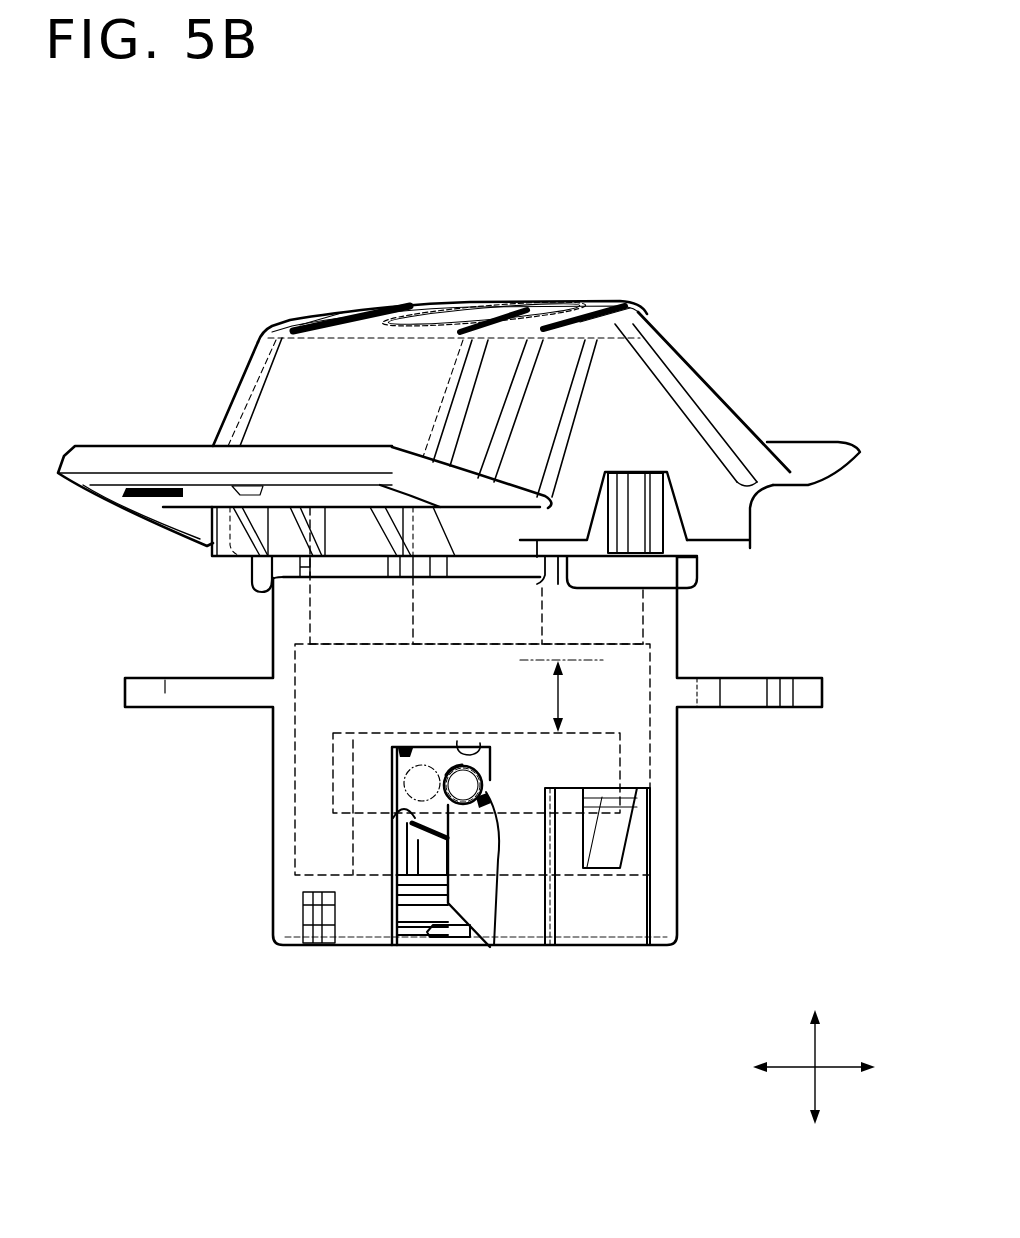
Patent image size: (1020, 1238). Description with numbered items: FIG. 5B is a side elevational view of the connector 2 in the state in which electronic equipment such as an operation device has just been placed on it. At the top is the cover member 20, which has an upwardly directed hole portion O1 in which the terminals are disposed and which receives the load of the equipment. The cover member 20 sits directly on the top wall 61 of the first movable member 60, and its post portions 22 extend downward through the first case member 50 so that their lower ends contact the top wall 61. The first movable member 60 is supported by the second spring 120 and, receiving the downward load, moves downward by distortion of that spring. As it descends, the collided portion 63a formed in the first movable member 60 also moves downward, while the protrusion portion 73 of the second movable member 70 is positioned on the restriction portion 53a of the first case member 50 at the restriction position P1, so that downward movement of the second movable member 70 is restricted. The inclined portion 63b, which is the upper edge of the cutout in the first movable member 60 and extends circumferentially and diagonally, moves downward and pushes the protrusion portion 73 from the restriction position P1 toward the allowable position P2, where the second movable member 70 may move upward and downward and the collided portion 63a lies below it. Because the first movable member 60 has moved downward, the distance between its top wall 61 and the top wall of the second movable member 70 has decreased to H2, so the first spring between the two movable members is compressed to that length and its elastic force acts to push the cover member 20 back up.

The connector 2 is at (402, 242).
The hole portion O1 is at (326, 312).
The cover member 20 is at (687, 355).
The post portions 22 is at (310, 604).
The first case member 50 is at (679, 886).
The restriction portion 53a is at (496, 805).
The first movable member 60 is at (652, 745).
The top wall 61 is at (458, 641).
The collided portion 63a is at (403, 808).
The inclined portion 63b is at (460, 742).
The second movable member 70 is at (622, 775).
The protrusion portion 73 is at (513, 766).
The second spring 120 is at (416, 910).
The restriction position P1 is at (490, 788).
The allowable position P2 is at (397, 748).
The distance between top walls H2 is at (564, 696).